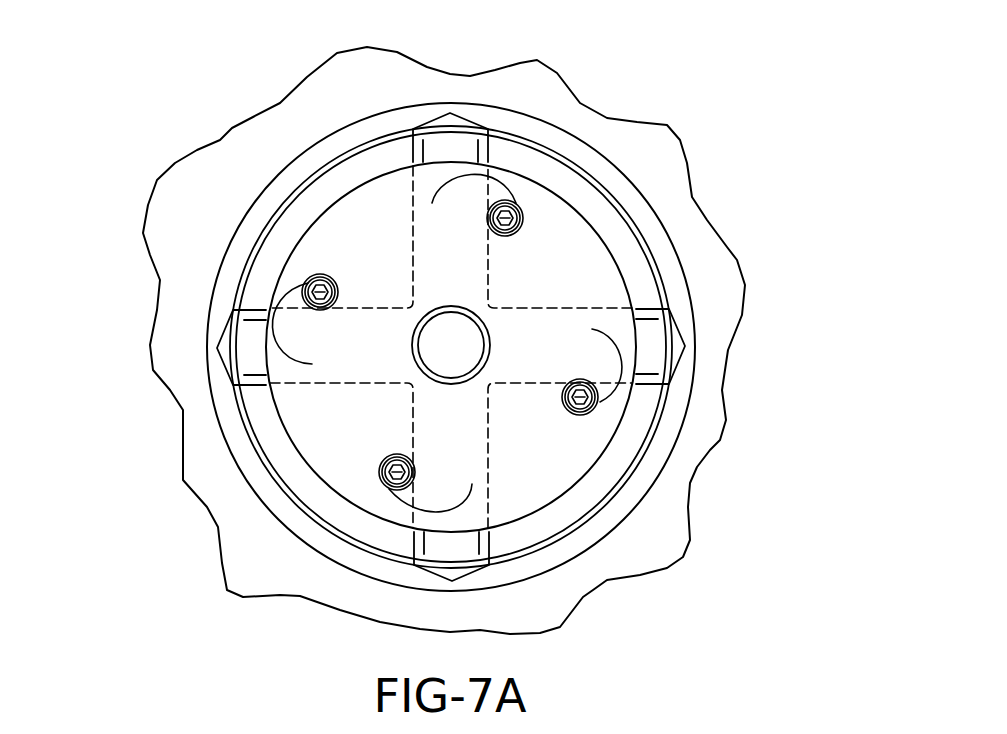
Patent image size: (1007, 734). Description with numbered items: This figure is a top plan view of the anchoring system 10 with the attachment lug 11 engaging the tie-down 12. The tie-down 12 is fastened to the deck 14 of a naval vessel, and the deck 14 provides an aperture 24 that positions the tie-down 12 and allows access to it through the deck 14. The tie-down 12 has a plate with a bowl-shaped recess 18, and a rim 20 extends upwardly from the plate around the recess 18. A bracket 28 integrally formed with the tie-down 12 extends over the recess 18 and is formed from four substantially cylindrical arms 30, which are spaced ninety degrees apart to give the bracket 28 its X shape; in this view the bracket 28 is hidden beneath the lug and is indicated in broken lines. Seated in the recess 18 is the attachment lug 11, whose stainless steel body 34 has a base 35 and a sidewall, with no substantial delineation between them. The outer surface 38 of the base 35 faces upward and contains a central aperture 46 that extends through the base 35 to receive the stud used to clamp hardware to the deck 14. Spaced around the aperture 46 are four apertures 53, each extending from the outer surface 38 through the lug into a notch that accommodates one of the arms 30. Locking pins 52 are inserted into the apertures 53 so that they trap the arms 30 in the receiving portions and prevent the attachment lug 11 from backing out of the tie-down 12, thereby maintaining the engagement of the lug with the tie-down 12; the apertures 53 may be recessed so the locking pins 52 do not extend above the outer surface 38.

The anchoring system 10 is at (160, 520).
The attachment lug 11 is at (377, 223).
The tie-down 12 is at (668, 462).
The deck 14 is at (662, 532).
The recess 18 is at (330, 505).
The rim 20 is at (612, 515).
The aperture 24 is at (570, 557).
The bracket 28 is at (300, 383).
The arm 30 is at (460, 140).
The body 34 is at (610, 247).
The base 35 is at (548, 198).
The outer surface 38 is at (347, 240).
The aperture 46 is at (439, 365).
The locking pin 52 is at (322, 292).
The aperture 53 is at (447, 343).